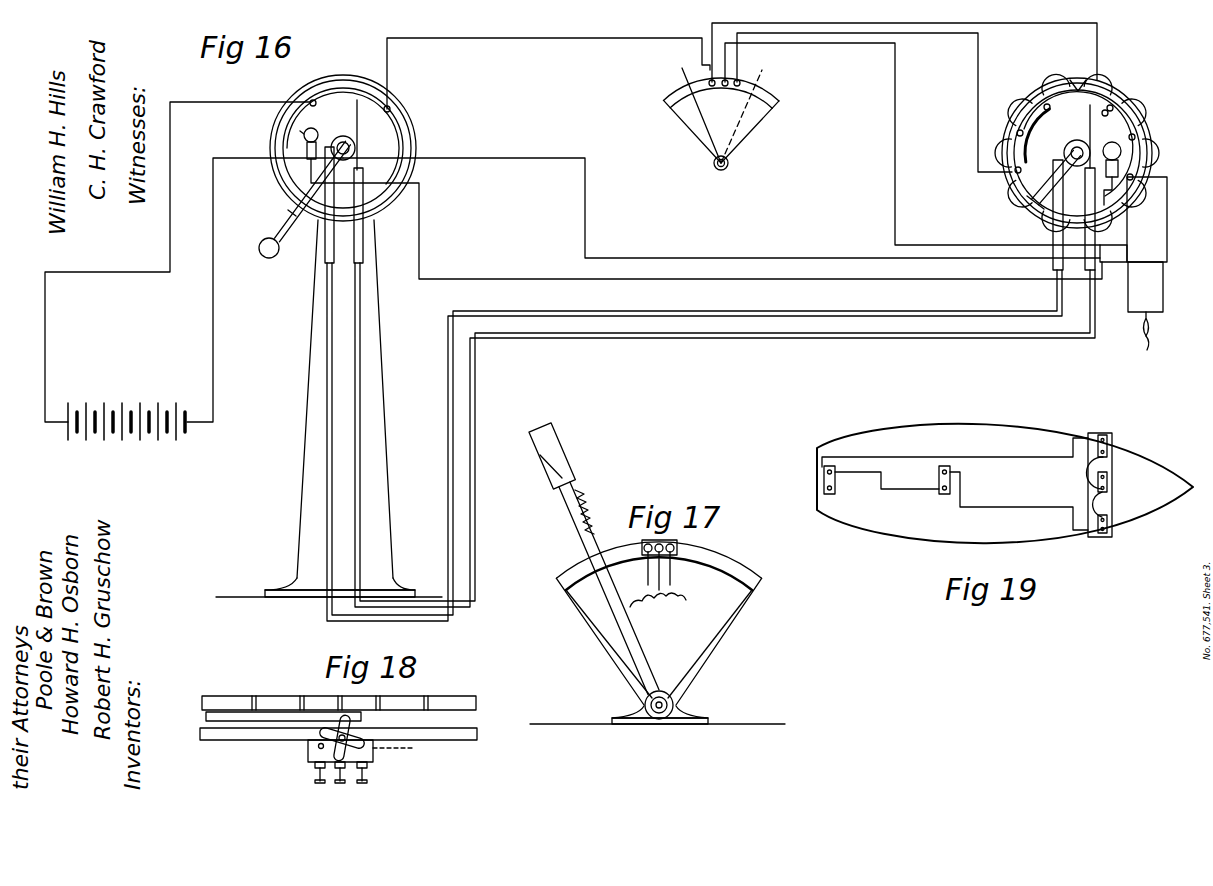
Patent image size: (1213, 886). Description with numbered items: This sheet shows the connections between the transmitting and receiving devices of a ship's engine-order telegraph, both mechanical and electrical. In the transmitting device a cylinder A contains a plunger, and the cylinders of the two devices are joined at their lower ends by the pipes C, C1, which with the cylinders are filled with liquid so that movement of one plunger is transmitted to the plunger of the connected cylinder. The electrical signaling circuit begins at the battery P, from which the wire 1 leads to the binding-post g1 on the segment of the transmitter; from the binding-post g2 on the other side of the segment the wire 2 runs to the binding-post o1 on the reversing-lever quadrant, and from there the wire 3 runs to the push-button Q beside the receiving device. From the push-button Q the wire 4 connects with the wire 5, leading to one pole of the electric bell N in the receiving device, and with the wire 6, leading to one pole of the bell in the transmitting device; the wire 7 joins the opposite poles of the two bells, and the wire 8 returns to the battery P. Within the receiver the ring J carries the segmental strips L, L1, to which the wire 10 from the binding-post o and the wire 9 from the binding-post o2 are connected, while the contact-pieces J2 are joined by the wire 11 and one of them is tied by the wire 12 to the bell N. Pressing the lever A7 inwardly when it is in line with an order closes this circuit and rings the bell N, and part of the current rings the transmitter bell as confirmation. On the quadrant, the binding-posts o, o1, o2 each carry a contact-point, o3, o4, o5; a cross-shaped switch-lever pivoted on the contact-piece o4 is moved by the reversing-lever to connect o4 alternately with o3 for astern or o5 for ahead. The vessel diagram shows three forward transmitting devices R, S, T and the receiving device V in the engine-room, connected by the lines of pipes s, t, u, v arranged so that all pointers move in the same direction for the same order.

In FIG. 16, the wire 1 is at (168, 255).
In FIG. 16, the wire 2 is at (546, 37).
In FIG. 16, the wire 3 is at (896, 143).
In FIG. 16, the wire 4 is at (1164, 290).
In FIG. 16, the wire 5 is at (1168, 208).
In FIG. 16, the wire 6 is at (670, 257).
In FIG. 16, the wire 7 is at (1004, 280).
In FIG. 16, the wire 8 is at (214, 328).
In FIG. 16, the wire 9 is at (1054, 25).
In FIG. 16, the wire 10 is at (977, 77).
In FIG. 16, the wire 11 is at (1050, 86).
In FIG. 16, the wire 12 is at (1118, 246).
In FIG. 16, the binding-post g1 is at (316, 100).
In FIG. 16, the binding-post g2 is at (391, 108).
In FIG. 16, the ring J is at (315, 130).
In FIG. 16, the contact-pieces J2 is at (1082, 79).
In FIG. 16, the cylinder A is at (329, 336).
In FIG. 16, the lever A7 is at (274, 257).
In FIG. 16, the pipe C is at (362, 425).
In FIG. 16, the pipe C1 is at (322, 432).
In FIG. 16, the source of electrical energy P is at (138, 405).
In FIG. 16, the segmental strip L is at (1036, 135).
In FIG. 16, the segmental strip L1 is at (1113, 104).
In FIG. 16, the electric bell N is at (1120, 144).
In FIG. 16, the push-button Q is at (1147, 338).
In FIG. 16, the binding-post o is at (679, 74).
In FIG. 17, the binding-post o is at (572, 512).
In FIG. 18, the binding-post o is at (210, 718).
In FIG. 16, the binding-post o1 is at (781, 102).
In FIG. 17, the binding-post o1 is at (757, 566).
In FIG. 18, the binding-post o1 is at (447, 700).
In FIG. 16, the binding-post o2 is at (722, 94).
In FIG. 17, the binding-post o2 is at (722, 530).
In FIG. 18, the binding-post o2 is at (298, 786).
In FIG. 18, the contact-point o3 is at (402, 746).
In FIG. 18, the contact-piece o4 is at (346, 737).
In FIG. 18, the contact-piece o5 is at (318, 747).
In FIG. 19, the wire n is at (1062, 457).
In FIG. 19, the transmitting device R is at (1108, 440).
In FIG. 19, the line of pipes s is at (1108, 481).
In FIG. 19, the transmitting device S is at (1089, 475).
In FIG. 19, the line of pipes t is at (1108, 516).
In FIG. 19, the transmitting device T is at (1113, 527).
In FIG. 19, the line of pipes u is at (882, 490).
In FIG. 19, the receiving device V is at (822, 485).
In FIG. 19, the line of pipes v is at (1003, 508).